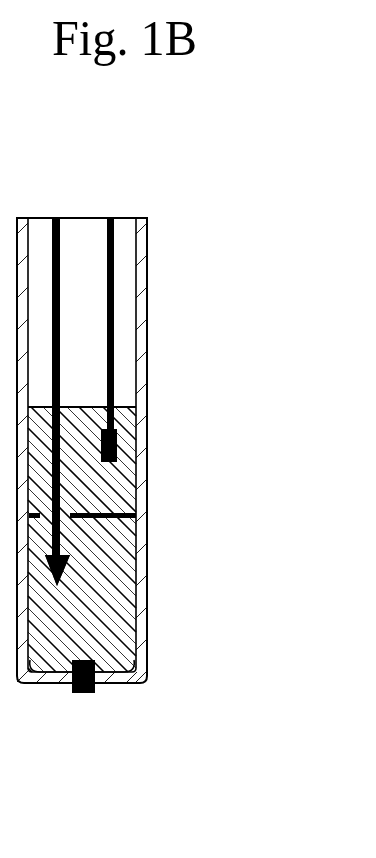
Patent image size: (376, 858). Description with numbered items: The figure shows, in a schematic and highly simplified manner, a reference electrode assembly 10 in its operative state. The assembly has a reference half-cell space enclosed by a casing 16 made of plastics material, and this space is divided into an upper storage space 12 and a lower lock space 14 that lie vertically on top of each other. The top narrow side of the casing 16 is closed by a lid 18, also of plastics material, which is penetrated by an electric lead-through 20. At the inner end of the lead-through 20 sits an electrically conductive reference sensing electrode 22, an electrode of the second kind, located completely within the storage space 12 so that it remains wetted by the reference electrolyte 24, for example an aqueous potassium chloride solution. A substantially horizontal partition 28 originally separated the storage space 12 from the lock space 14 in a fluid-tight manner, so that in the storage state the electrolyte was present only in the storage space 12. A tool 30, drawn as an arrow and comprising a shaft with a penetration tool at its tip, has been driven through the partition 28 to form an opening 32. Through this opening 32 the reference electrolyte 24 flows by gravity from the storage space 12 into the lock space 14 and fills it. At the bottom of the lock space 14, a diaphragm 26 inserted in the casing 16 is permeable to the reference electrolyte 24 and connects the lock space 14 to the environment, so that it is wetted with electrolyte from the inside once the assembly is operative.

The reference electrode assembly 10 is at (210, 236).
The storage space 12 is at (134, 350).
The lock space 14 is at (133, 579).
The casing 16 is at (145, 441).
The lid 18 is at (40, 217).
The electric lead-through 20 is at (110, 260).
The reference sensing electrode 22 is at (140, 421).
The reference electrolyte 24 is at (123, 630).
The diaphragm 26 is at (88, 696).
The partition 28 is at (130, 522).
The tool 30 is at (62, 580).
The opening 32 is at (62, 512).